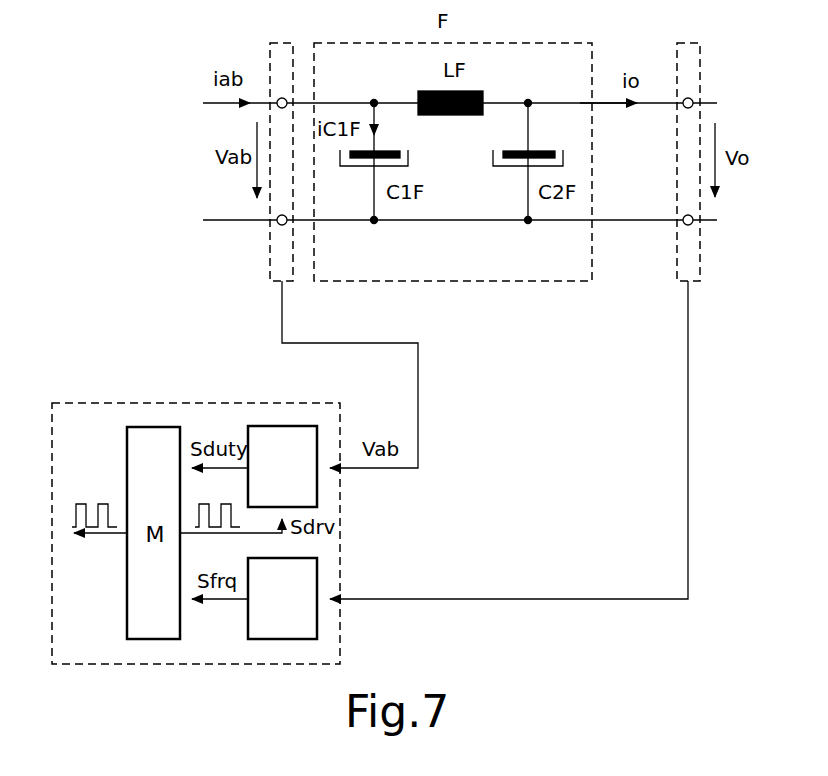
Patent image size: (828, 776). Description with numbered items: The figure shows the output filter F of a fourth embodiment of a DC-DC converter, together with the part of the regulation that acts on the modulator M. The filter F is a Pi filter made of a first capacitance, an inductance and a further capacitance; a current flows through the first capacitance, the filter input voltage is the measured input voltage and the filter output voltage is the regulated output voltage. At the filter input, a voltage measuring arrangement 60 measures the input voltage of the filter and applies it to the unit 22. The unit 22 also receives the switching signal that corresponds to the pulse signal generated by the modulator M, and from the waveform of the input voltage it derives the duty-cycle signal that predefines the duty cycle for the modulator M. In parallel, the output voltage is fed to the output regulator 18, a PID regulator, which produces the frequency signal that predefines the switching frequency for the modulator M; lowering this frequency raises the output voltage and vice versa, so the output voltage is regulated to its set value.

The voltage measuring arrangement 60 is at (270, 257).
The unit 22 is at (282, 466).
The output regulator 18 is at (282, 598).